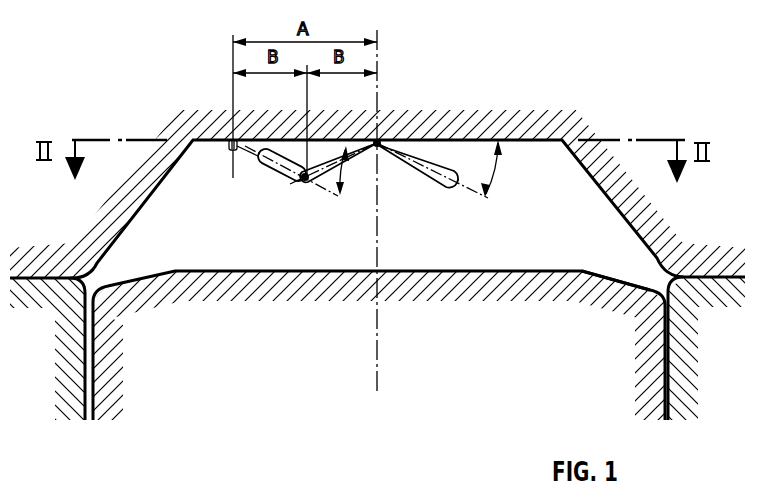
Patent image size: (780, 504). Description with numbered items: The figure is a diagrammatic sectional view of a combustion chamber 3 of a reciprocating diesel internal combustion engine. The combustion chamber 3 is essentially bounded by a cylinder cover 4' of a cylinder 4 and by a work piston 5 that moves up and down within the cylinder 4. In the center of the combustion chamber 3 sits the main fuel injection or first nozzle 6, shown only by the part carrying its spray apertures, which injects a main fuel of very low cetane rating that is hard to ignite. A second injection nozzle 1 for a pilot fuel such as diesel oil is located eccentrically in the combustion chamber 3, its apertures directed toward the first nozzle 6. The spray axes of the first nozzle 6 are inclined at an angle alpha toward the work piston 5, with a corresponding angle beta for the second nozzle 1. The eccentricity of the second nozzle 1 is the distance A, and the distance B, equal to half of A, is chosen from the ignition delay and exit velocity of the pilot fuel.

The second injection nozzle 1 is at (231, 149).
The combustion chamber 3 is at (512, 249).
The cylinder 4 is at (377, 348).
The cylinder cover 4' is at (377, 161).
The work piston 5 is at (582, 277).
The first injection nozzle 6 is at (380, 147).